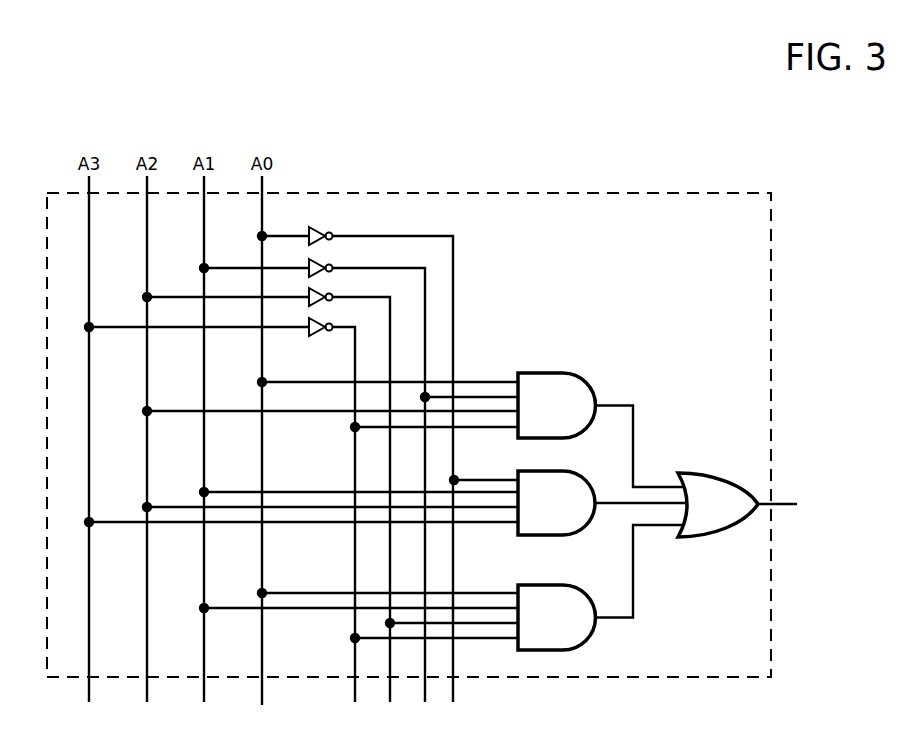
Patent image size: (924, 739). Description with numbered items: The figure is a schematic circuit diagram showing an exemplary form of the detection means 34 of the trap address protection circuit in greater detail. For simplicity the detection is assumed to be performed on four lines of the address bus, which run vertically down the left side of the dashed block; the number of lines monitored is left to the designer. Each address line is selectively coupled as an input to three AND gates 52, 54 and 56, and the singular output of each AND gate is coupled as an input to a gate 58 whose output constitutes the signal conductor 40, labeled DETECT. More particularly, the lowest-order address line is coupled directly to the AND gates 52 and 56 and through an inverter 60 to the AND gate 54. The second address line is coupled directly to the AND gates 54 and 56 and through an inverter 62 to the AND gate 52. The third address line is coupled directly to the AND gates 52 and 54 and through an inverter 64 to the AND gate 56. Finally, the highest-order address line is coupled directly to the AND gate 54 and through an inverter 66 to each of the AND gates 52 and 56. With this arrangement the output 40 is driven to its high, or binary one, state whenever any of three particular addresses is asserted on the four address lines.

The detection means 34 is at (568, 193).
The signal conductor 40 is at (785, 503).
The AND gate 52 is at (568, 382).
The AND gate 54 is at (560, 483).
The AND gate 56 is at (563, 597).
The NAND gate 58 is at (717, 478).
The inverter 60 is at (319, 227).
The inverter 62 is at (320, 265).
The inverter 64 is at (320, 293).
The inverter 66 is at (322, 336).